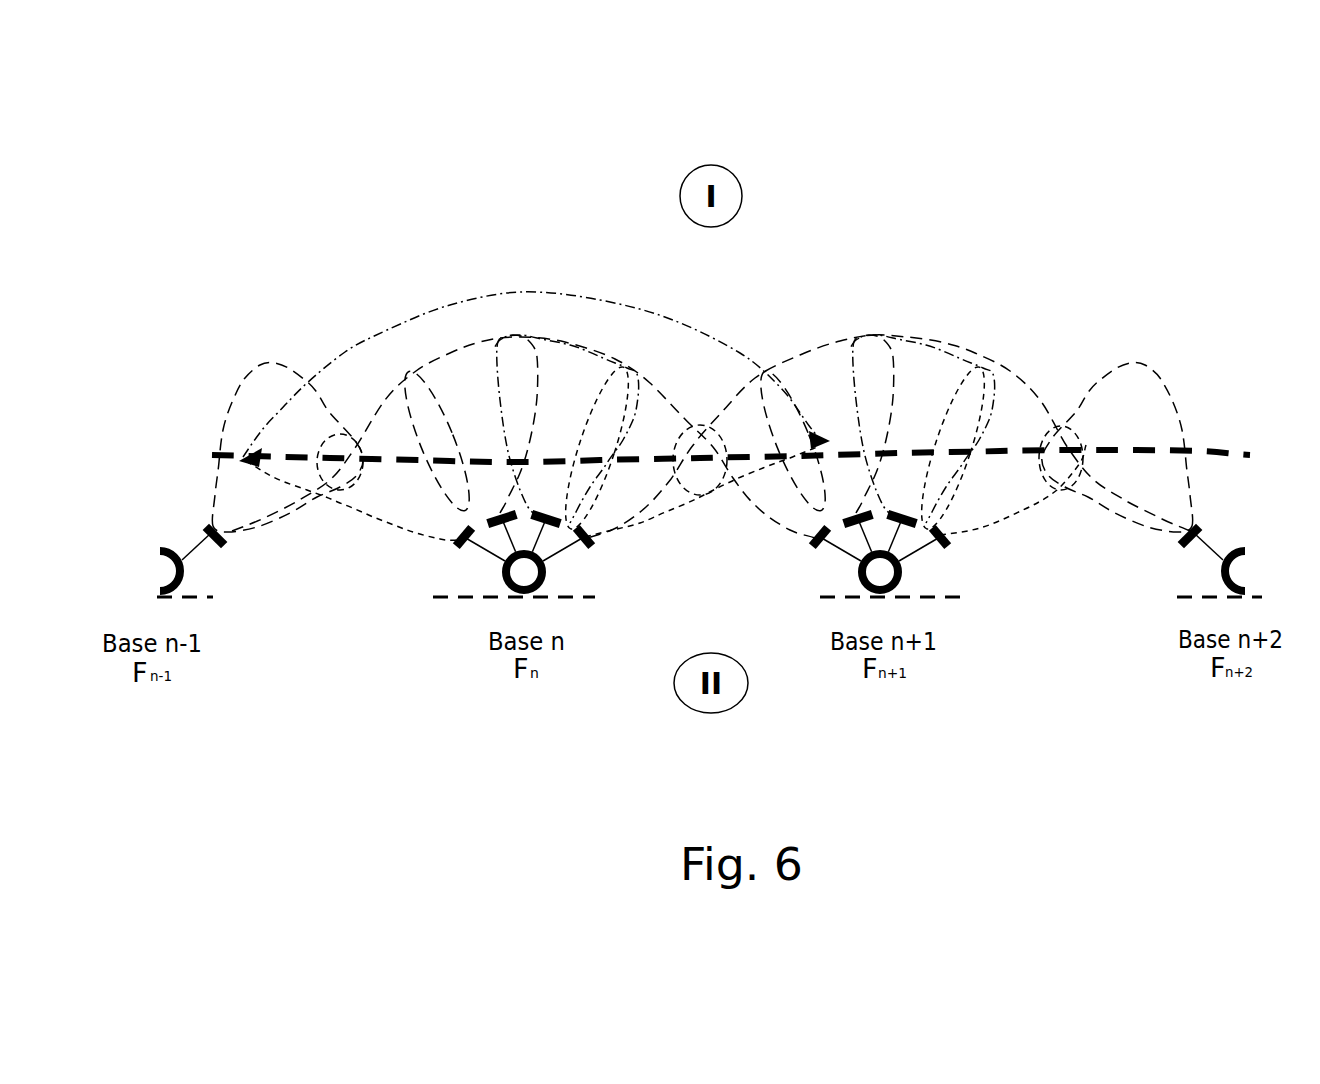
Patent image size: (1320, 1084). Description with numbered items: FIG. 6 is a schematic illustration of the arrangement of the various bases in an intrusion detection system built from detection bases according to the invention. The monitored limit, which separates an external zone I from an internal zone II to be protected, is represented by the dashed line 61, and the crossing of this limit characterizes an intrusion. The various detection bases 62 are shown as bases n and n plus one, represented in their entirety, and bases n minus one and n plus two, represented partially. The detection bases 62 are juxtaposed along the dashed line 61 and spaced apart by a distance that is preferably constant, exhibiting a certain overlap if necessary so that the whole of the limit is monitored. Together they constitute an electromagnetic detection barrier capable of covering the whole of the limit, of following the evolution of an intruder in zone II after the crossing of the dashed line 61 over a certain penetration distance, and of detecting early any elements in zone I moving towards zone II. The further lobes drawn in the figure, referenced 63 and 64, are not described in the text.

The dashed line 61 is at (1197, 450).
The detection bases 62 is at (505, 582).
The long-range radio beam 63 is at (492, 293).
The handover zone 64 is at (690, 445).